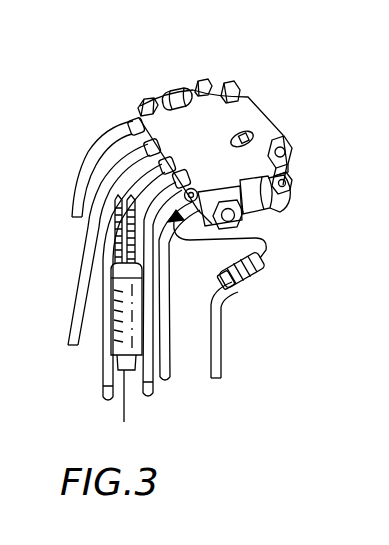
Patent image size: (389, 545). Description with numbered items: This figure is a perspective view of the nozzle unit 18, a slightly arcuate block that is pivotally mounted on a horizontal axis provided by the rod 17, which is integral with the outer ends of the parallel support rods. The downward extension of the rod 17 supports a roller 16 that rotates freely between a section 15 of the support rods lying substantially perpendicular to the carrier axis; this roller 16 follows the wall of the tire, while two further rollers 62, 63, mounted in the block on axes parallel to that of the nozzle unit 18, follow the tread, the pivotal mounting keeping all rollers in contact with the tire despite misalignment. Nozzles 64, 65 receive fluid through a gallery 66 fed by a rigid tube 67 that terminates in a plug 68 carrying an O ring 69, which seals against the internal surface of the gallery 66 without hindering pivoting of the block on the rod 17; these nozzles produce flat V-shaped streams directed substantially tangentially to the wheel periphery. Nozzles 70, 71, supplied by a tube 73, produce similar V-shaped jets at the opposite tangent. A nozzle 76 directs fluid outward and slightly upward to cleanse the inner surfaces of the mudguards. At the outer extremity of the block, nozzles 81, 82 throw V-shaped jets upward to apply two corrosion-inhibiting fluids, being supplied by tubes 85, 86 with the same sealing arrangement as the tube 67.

The section of support rods 15 is at (103, 388).
The roller 16 is at (123, 342).
The rod 17 is at (123, 411).
The nozzle unit 18 is at (254, 112).
The roller 62 is at (263, 207).
The roller 63 is at (174, 88).
The nozzle 64 is at (225, 202).
The nozzle 65 is at (293, 182).
The gallery 66 is at (196, 188).
The rigid tube 67 is at (222, 354).
The plug 68 is at (238, 288).
The O ring 69 is at (262, 273).
The nozzle 70 is at (143, 100).
The nozzle 71 is at (202, 80).
The tube 73 is at (88, 165).
The nozzle 76 is at (254, 135).
The nozzle 81 is at (233, 84).
The nozzle 82 is at (291, 150).
The tube 85 is at (92, 241).
The tube 86 is at (158, 284).